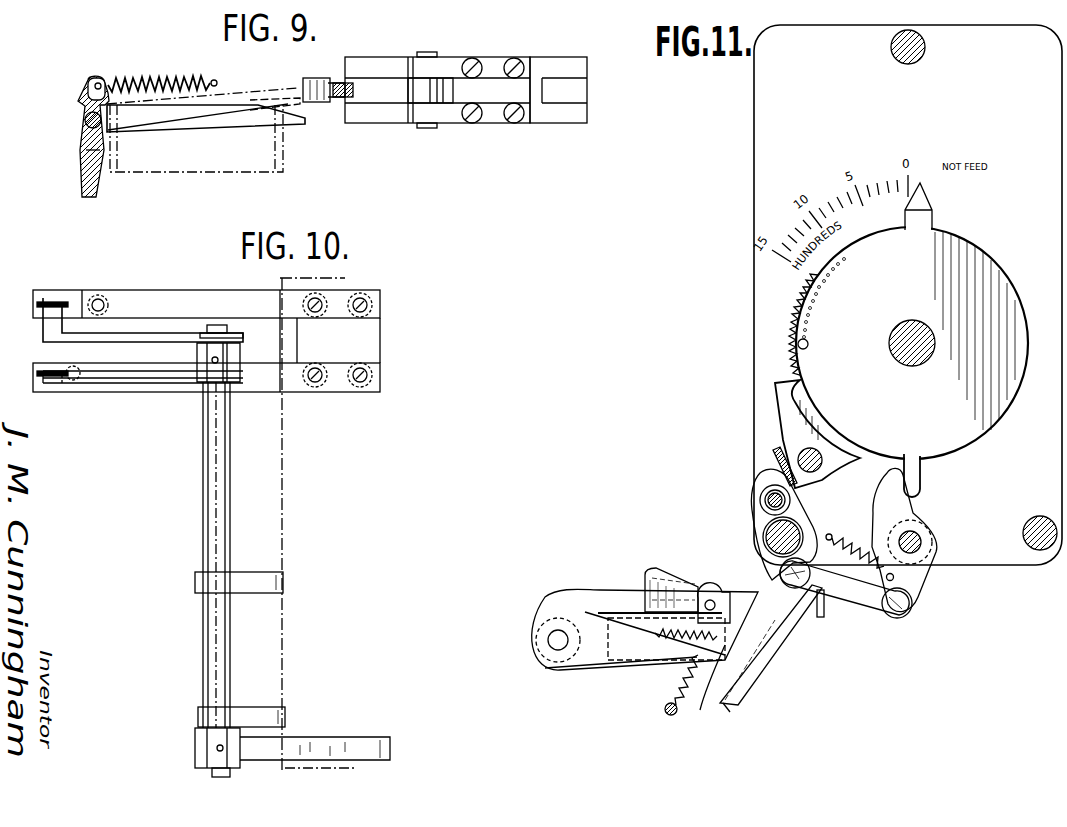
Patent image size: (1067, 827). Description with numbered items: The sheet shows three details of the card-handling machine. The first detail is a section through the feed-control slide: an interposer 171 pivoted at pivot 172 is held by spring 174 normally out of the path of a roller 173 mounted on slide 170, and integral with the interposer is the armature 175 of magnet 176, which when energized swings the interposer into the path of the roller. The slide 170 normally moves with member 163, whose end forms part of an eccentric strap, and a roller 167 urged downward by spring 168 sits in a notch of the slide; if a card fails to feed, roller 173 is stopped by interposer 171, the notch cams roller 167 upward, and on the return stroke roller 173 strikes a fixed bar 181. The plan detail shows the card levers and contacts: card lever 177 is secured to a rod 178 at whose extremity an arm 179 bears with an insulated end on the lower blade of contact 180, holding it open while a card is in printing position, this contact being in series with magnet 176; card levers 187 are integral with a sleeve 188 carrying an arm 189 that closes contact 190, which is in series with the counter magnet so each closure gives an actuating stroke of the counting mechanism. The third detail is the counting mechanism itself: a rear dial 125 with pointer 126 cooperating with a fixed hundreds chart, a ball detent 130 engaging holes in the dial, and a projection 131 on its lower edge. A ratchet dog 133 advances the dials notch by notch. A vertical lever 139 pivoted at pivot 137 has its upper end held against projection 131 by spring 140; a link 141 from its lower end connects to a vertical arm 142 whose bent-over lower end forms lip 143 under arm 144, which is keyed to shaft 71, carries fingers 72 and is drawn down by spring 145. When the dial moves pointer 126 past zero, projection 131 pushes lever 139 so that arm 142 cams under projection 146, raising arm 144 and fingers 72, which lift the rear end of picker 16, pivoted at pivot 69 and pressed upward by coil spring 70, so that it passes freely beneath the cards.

In FIG. 11, the picker 16 is at (819, 618).
In FIG. 11, the pivot 69 is at (712, 600).
In FIG. 11, the coil spring 70 is at (680, 605).
In FIG. 11, the shaft 71 is at (558, 650).
In FIG. 11, the fingers 72 is at (588, 596).
In FIG. 11, the rear dial 125 is at (978, 285).
In FIG. 11, the pointer 126 is at (926, 205).
In FIG. 11, the ball detent 130 is at (812, 346).
In FIG. 11, the projection 131 is at (922, 492).
In FIG. 11, the ratchet dog 133 is at (786, 424).
In FIG. 11, the pivot 137 is at (916, 545).
In FIG. 11, the vertical lever 139 is at (912, 578).
In FIG. 11, the spring 140 is at (852, 540).
In FIG. 11, the link 141 is at (849, 594).
In FIG. 11, the vertical arm 142 is at (760, 662).
In FIG. 11, the lip 143 is at (685, 675).
In FIG. 11, the arm 144 is at (590, 667).
In FIG. 11, the spring 145 is at (669, 717).
In FIG. 11, the projection 146 is at (710, 695).
In FIG. 9, the member 163 is at (556, 62).
In FIG. 9, the roller 167 is at (428, 84).
In FIG. 9, the spring 168 is at (494, 66).
In FIG. 9, the slide 170 is at (366, 80).
In FIG. 9, the interposer 171 is at (229, 117).
In FIG. 9, the pivot 172 is at (85, 122).
In FIG. 9, the roller 173 is at (311, 84).
In FIG. 9, the spring 174 is at (112, 82).
In FIG. 9, the armature 175 is at (82, 165).
In FIG. 9, the magnet 176 is at (172, 167).
In FIG. 10, the card lever 177 is at (343, 745).
In FIG. 10, the rod 178 is at (214, 773).
In FIG. 10, the arm 179 is at (136, 336).
In FIG. 10, the contact 180 is at (101, 299).
In FIG. 9, the fixed bar 181 is at (343, 99).
In FIG. 10, the card levers 187 is at (249, 718).
In FIG. 10, the sleeve 188 is at (203, 484).
In FIG. 10, the arm 189 is at (133, 380).
In FIG. 10, the contact 190 is at (90, 370).